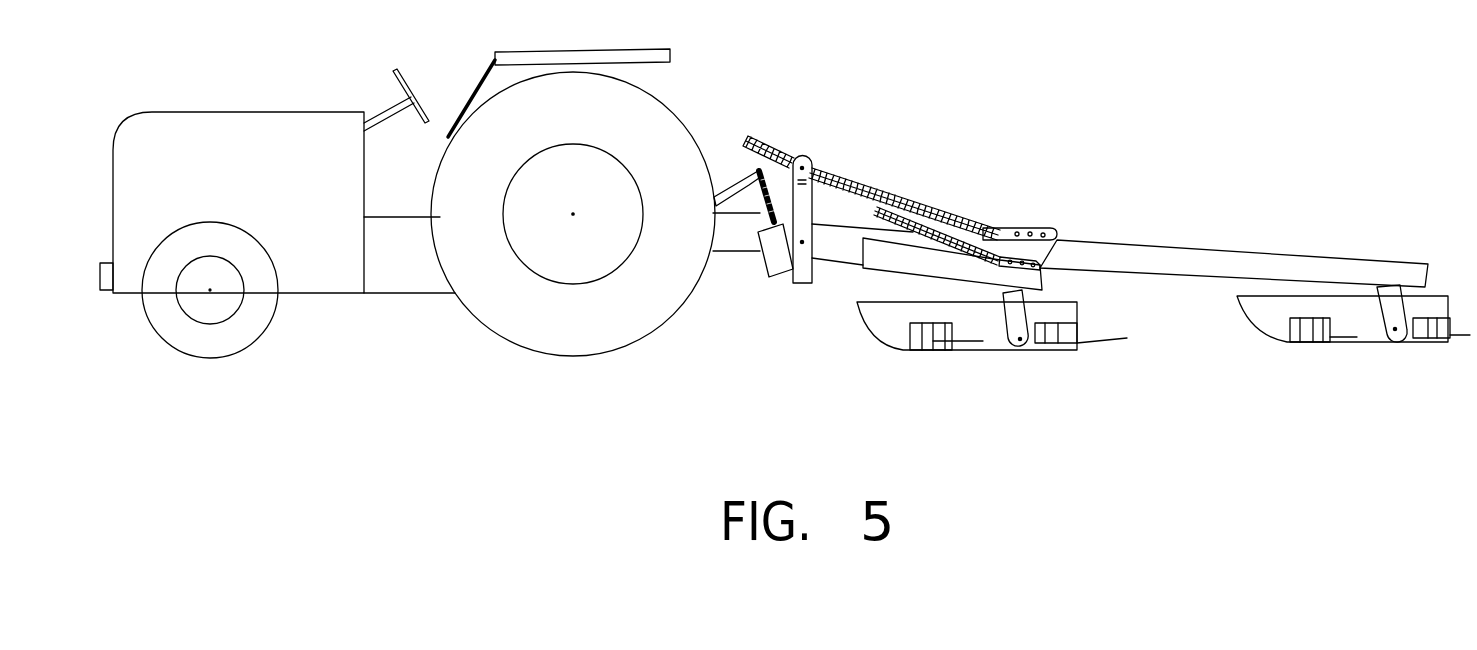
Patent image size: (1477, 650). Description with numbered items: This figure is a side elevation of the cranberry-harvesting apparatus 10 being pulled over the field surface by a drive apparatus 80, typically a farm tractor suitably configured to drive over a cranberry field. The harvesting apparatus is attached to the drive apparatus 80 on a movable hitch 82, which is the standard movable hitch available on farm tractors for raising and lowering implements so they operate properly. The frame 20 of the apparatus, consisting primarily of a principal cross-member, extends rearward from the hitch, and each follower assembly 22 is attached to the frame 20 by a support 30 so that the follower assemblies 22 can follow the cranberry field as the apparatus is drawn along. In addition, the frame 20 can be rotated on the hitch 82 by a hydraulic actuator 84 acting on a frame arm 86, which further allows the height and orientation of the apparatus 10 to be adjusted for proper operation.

The cranberry-harvesting apparatus 10 is at (1077, 147).
The frame 20 is at (782, 270).
The follower assembly 22 is at (890, 322).
The support 30 is at (1170, 258).
The drive apparatus 80 is at (237, 147).
The movable hitch 82 is at (738, 247).
The hydraulic actuator 84 is at (725, 187).
The frame arm 86 is at (762, 193).